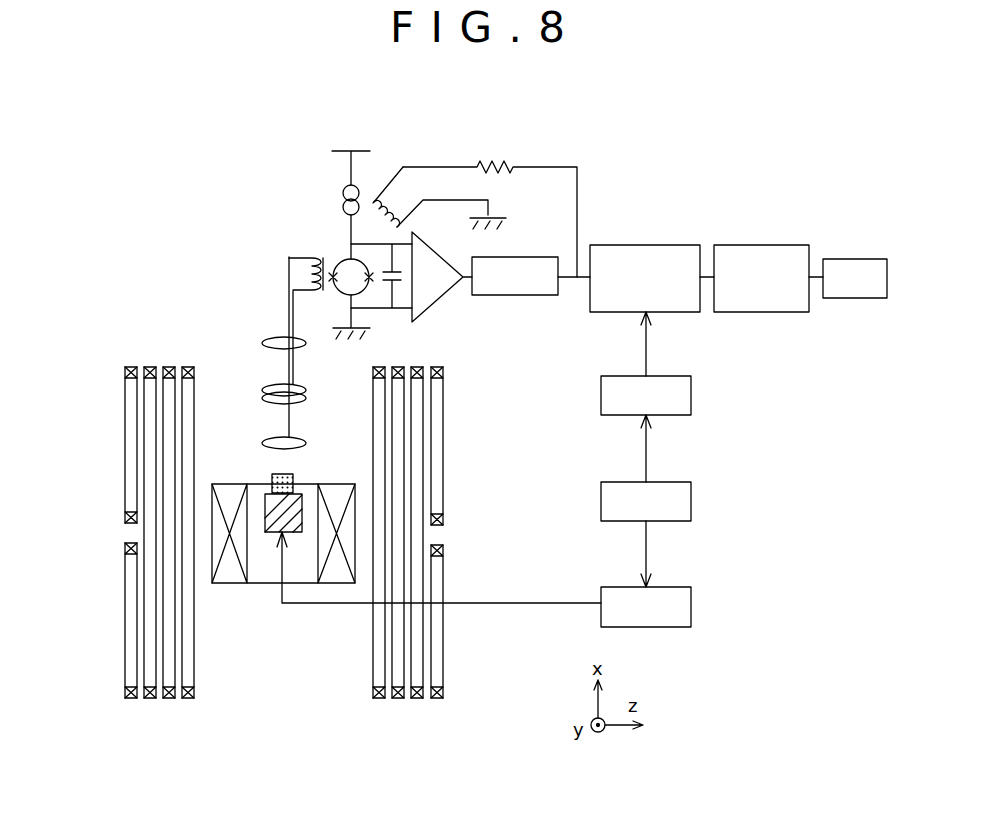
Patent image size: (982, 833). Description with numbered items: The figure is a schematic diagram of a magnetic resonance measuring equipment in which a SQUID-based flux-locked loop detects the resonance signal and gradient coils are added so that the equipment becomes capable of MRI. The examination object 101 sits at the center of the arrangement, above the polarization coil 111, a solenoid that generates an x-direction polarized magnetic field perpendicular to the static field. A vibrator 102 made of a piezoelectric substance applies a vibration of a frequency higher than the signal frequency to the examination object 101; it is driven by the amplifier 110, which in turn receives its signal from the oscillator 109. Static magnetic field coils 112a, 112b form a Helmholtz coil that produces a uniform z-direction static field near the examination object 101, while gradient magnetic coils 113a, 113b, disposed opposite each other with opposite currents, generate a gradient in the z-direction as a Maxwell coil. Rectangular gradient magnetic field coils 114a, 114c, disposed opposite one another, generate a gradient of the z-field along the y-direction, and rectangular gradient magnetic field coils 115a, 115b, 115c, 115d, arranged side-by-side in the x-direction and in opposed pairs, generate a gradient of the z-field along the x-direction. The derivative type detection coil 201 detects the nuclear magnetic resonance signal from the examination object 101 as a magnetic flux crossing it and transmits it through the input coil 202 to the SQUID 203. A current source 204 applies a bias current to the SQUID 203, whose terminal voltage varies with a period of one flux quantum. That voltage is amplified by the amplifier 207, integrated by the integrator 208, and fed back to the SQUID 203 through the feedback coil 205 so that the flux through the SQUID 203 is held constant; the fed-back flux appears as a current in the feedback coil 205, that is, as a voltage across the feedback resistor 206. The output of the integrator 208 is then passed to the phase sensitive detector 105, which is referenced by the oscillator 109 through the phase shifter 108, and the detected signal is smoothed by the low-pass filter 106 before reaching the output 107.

The examination object 101 is at (272, 477).
The vibrator 102 is at (300, 494).
The phase sensitive detector 105 is at (643, 245).
The low-pass filter 106 is at (745, 245).
The output 107 is at (843, 259).
The phase shifter 108 is at (691, 382).
The oscillator 109 is at (691, 500).
The amplifier 110 is at (691, 603).
The polarization coil 111 is at (240, 583).
The static magnetic field coil 112a is at (185, 700).
The static magnetic field coil 112b is at (377, 700).
The gradient magnetic coil 113a is at (165, 700).
The gradient magnetic coil 113b is at (398, 700).
The gradient magnetic field coil 114a is at (145, 700).
The gradient magnetic field coil 114c is at (415, 700).
The gradient magnetic field coil 115a is at (123, 420).
The gradient magnetic field coil 115b is at (123, 630).
The gradient magnetic field coil 115c is at (443, 428).
The gradient magnetic field coil 115d is at (443, 650).
The derivative type detection coil 201 is at (257, 374).
The input coil 202 is at (297, 253).
The SQUID 203 is at (338, 248).
The current source 204 is at (335, 188).
The feedback coil 205 is at (385, 177).
The feedback resistor 206 is at (500, 150).
The amplifier 207 is at (438, 307).
The integrator 208 is at (522, 297).